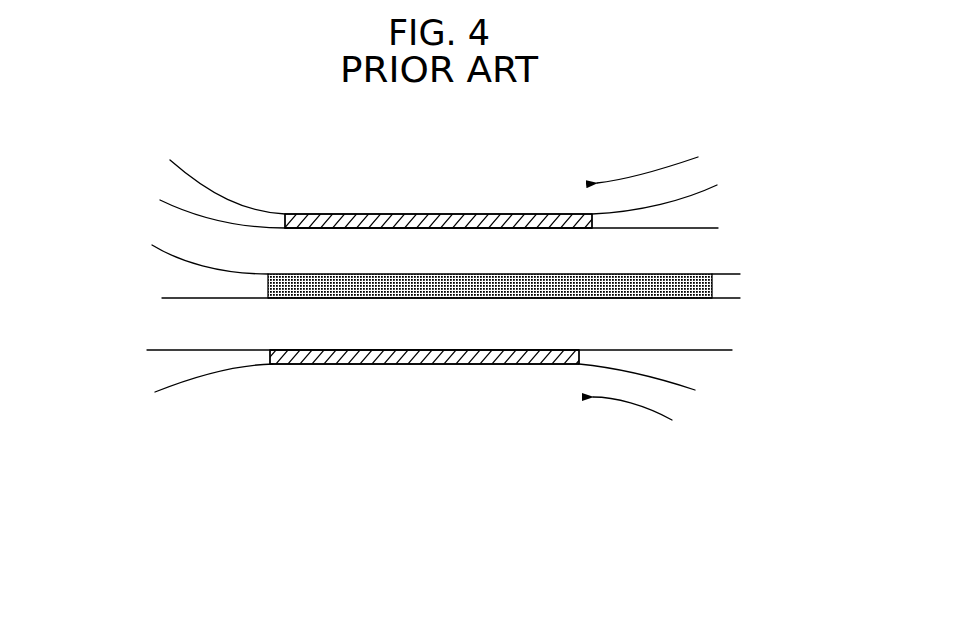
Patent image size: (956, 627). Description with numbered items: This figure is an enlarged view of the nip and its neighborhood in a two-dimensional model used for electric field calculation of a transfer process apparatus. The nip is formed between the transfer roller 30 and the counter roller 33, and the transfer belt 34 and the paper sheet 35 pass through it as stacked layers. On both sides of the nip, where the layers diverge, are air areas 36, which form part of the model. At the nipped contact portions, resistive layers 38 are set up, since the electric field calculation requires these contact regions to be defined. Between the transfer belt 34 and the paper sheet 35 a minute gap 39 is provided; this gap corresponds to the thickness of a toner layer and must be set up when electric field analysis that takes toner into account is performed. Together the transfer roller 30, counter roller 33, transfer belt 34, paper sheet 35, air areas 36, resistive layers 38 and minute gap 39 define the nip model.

The transfer roller 30 is at (213, 408).
The counter roller 33 is at (213, 168).
The transfer belt 34 is at (335, 237).
The paper sheet 35 is at (337, 337).
The air areas 36 is at (160, 367).
The resistive layers 38 is at (403, 358).
The minute gap 39 is at (500, 290).